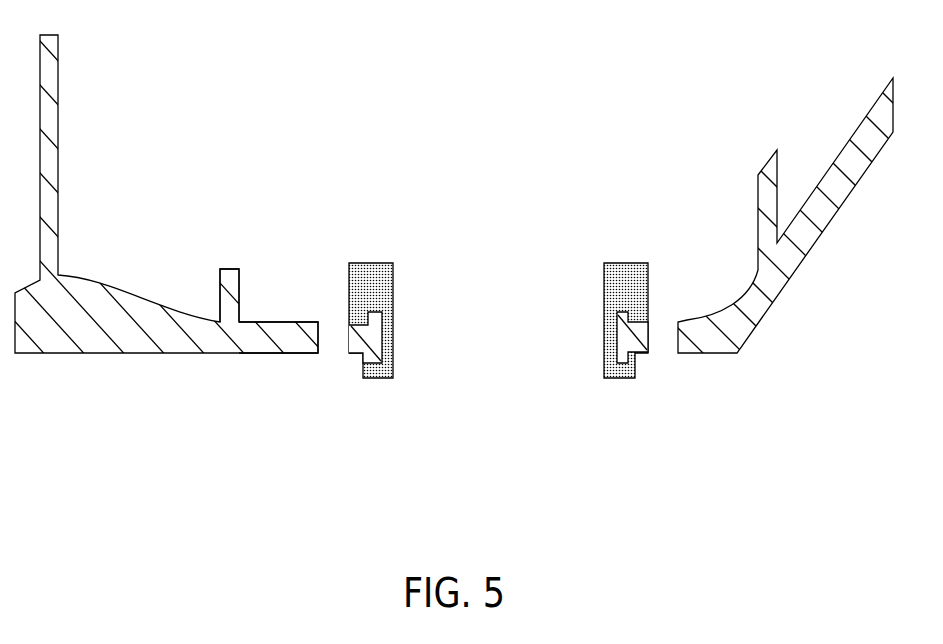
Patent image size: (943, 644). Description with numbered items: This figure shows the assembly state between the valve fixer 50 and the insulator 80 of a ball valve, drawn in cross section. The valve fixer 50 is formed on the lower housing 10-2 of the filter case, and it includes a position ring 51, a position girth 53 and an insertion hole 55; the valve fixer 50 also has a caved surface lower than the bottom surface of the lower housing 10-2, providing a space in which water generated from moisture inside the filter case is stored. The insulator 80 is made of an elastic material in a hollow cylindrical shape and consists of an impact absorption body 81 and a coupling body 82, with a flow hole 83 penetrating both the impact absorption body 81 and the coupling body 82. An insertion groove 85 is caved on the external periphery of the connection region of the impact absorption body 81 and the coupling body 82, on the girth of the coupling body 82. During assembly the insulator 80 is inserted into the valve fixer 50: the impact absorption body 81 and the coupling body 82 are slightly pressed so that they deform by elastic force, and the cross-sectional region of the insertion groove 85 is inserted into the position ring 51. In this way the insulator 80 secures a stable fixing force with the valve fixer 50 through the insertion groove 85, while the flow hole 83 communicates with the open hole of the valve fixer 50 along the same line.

The valve fixer 50 is at (268, 212).
The lower housing 10-2 is at (83, 292).
The position girth 53 is at (263, 338).
The insertion hole 55 is at (337, 333).
The insertion groove 85 is at (393, 340).
The flow hole 83 is at (517, 330).
The position ring 51 is at (613, 337).
The insulator 80 is at (685, 478).
The impact absorption body 81 is at (648, 292).
The coupling body 82 is at (638, 368).